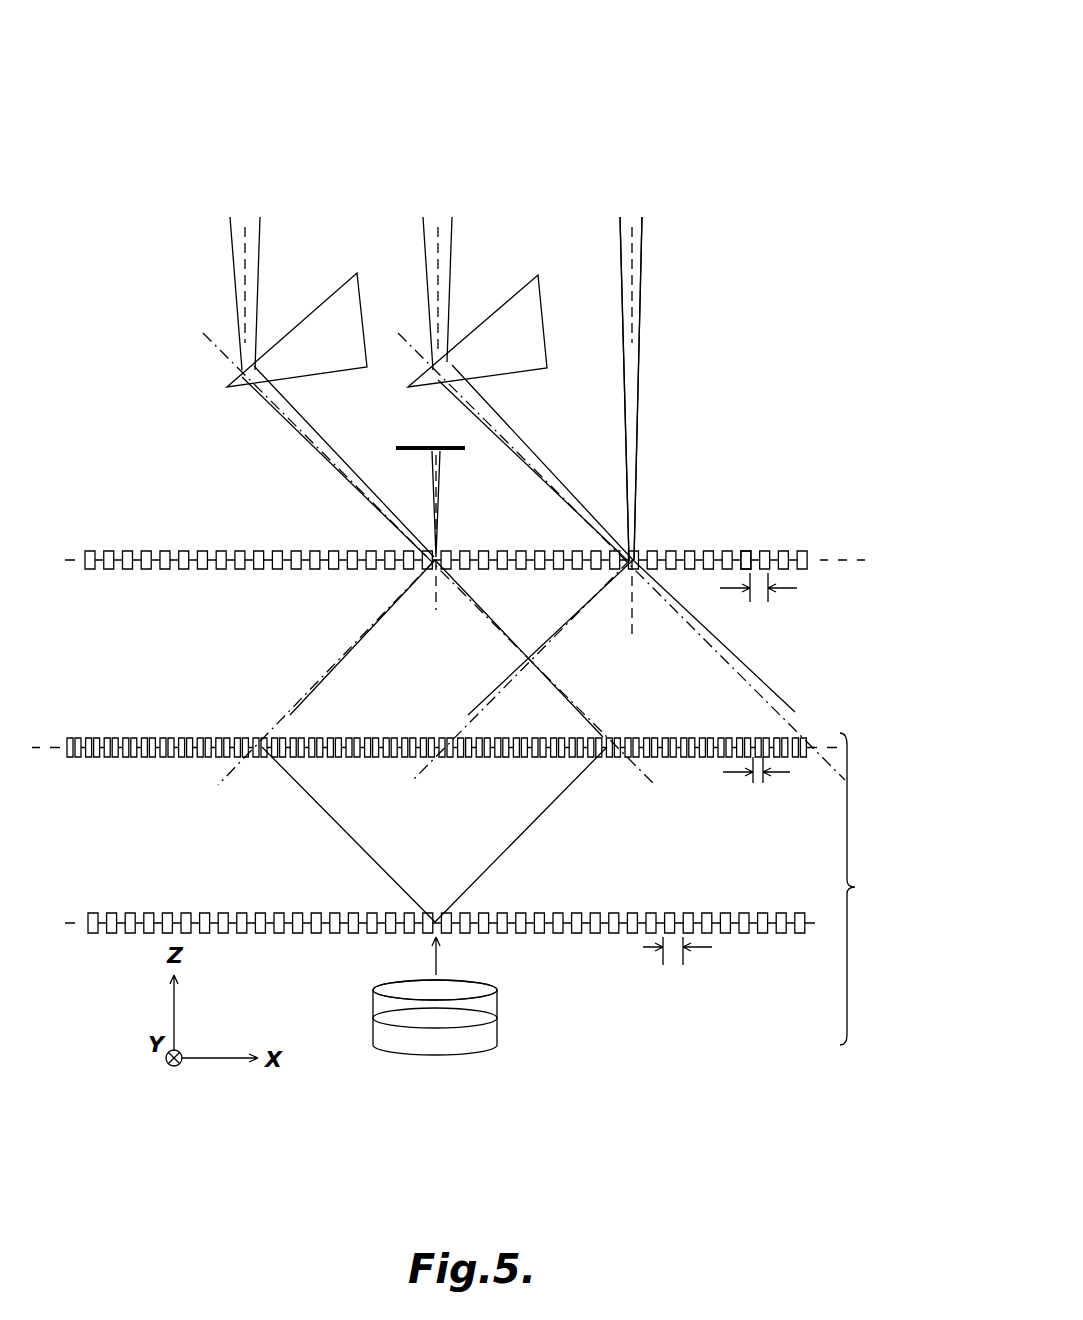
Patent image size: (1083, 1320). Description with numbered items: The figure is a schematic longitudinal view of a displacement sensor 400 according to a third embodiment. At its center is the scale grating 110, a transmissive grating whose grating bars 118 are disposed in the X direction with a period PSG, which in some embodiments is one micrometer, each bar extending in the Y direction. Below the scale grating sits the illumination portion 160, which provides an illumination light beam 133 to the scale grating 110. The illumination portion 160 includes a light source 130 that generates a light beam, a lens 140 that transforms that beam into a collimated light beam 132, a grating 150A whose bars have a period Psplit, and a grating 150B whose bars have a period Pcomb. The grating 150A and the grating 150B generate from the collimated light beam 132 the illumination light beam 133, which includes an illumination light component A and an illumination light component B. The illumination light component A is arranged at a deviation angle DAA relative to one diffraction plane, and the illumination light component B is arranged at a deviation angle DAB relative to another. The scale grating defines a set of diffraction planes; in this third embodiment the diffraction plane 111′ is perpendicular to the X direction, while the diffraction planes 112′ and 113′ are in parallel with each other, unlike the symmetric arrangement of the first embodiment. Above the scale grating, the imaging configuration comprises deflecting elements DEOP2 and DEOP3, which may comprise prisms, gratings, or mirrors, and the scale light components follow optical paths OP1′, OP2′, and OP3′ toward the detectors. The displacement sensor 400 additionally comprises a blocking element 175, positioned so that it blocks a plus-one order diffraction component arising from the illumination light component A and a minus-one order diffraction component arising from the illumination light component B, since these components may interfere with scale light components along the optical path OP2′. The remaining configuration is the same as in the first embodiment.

The displacement sensor 400 is at (779, 34).
The scale grating 110 is at (792, 537).
The grating bars 118 is at (742, 551).
The period of the scale grating bars PSG is at (787, 588).
The grating 150B is at (708, 707).
The period of grating 150B Pcomb is at (783, 772).
The grating 150A is at (698, 910).
The period of grating 150A Psplit is at (643, 945).
The light source 130 is at (497, 1033).
The lens 140 is at (497, 1005).
The collimated light beam 132 is at (436, 960).
The illumination light beam 133 is at (133, 642).
The illumination portion 160 is at (874, 889).
The optical path OP3′ is at (246, 277).
The optical path OP2′ is at (445, 277).
The optical path OP1′ is at (631, 372).
The diffraction plane 111′ is at (633, 268).
The diffraction plane 112′ is at (518, 447).
The diffraction plane 113′ is at (330, 448).
The deflecting element DEOP3 is at (317, 352).
The deflecting element DEOP2 is at (530, 352).
The blocking element 175 is at (458, 451).
The illumination light component A is at (510, 632).
The illumination light component B is at (563, 623).
The deviation angle DAB is at (506, 696).
The deviation angle DAA is at (726, 661).